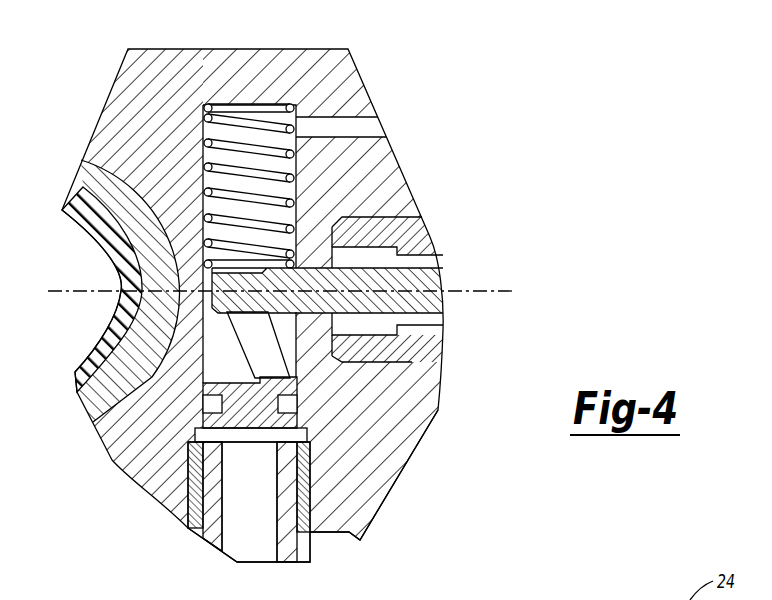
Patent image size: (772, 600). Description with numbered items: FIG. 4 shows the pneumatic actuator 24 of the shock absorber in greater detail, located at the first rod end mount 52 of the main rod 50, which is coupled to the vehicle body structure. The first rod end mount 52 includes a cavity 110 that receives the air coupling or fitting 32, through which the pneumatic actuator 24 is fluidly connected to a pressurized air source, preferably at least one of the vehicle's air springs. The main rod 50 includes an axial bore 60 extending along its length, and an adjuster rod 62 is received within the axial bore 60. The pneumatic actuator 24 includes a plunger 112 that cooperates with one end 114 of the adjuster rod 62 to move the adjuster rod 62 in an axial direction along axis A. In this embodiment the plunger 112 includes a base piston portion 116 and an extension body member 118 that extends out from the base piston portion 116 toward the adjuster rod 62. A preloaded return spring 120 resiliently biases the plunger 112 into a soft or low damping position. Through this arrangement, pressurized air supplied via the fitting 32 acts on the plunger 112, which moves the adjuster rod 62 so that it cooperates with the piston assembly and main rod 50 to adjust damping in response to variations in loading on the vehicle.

The pneumatic actuator 24 is at (307, 410).
The air coupling or fitting 32 is at (210, 532).
The main rod 50 is at (430, 240).
The first rod end mount 52 is at (120, 105).
The axial bore 60 is at (432, 263).
The adjuster rod 62 is at (440, 305).
The cavity 110 is at (290, 343).
The plunger 112 is at (232, 345).
The end of adjuster rod 114 is at (303, 268).
The base piston portion 116 is at (250, 408).
The extension body member 118 is at (257, 347).
The preloaded return spring 120 is at (245, 125).
The axis A is at (78, 291).